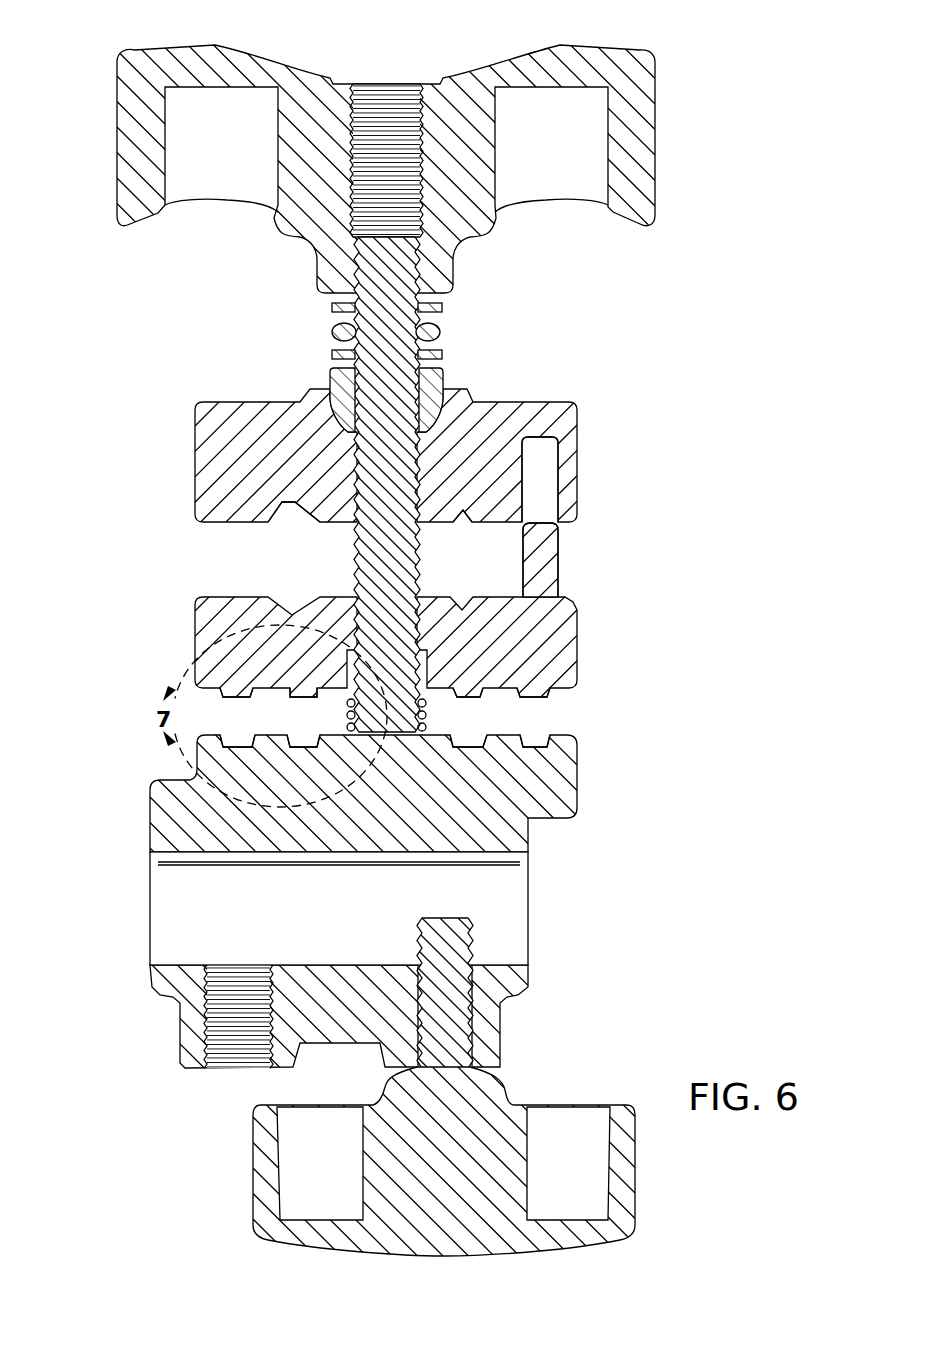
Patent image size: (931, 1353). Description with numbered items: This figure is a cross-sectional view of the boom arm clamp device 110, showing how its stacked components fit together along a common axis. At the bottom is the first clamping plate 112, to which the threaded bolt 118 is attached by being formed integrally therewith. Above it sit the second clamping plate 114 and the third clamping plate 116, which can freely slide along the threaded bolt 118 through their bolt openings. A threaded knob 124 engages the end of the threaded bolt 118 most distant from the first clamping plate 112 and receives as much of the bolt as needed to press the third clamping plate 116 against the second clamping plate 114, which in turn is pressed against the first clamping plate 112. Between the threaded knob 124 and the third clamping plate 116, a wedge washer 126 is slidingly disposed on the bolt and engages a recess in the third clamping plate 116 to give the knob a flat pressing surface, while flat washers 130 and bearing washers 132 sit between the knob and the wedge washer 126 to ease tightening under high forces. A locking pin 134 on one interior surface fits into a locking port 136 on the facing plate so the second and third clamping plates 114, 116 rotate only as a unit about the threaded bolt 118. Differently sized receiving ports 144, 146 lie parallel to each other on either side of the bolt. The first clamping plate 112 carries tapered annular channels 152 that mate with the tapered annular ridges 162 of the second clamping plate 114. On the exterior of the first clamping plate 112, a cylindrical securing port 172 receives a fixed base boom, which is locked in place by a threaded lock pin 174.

The boom arm clamp device 110 is at (106, 357).
The first clamping plate 112 is at (578, 782).
The second clamping plate 114 is at (195, 624).
The third clamping plate 116 is at (195, 466).
The threaded bolt 118 is at (357, 563).
The threaded knob 124 is at (517, 57).
The wedge washer 126 is at (446, 382).
The flat washer 130 is at (332, 308).
The bearing washer 132 is at (443, 332).
The locking pin 134 is at (560, 561).
The locking port 136 is at (540, 482).
The receiving port 144 is at (280, 505).
The receiving port 146 is at (463, 512).
The channels 152 is at (537, 746).
The ridges 162 is at (540, 697).
The securing port 172 is at (497, 910).
The threaded lock pin 174 is at (447, 1044).